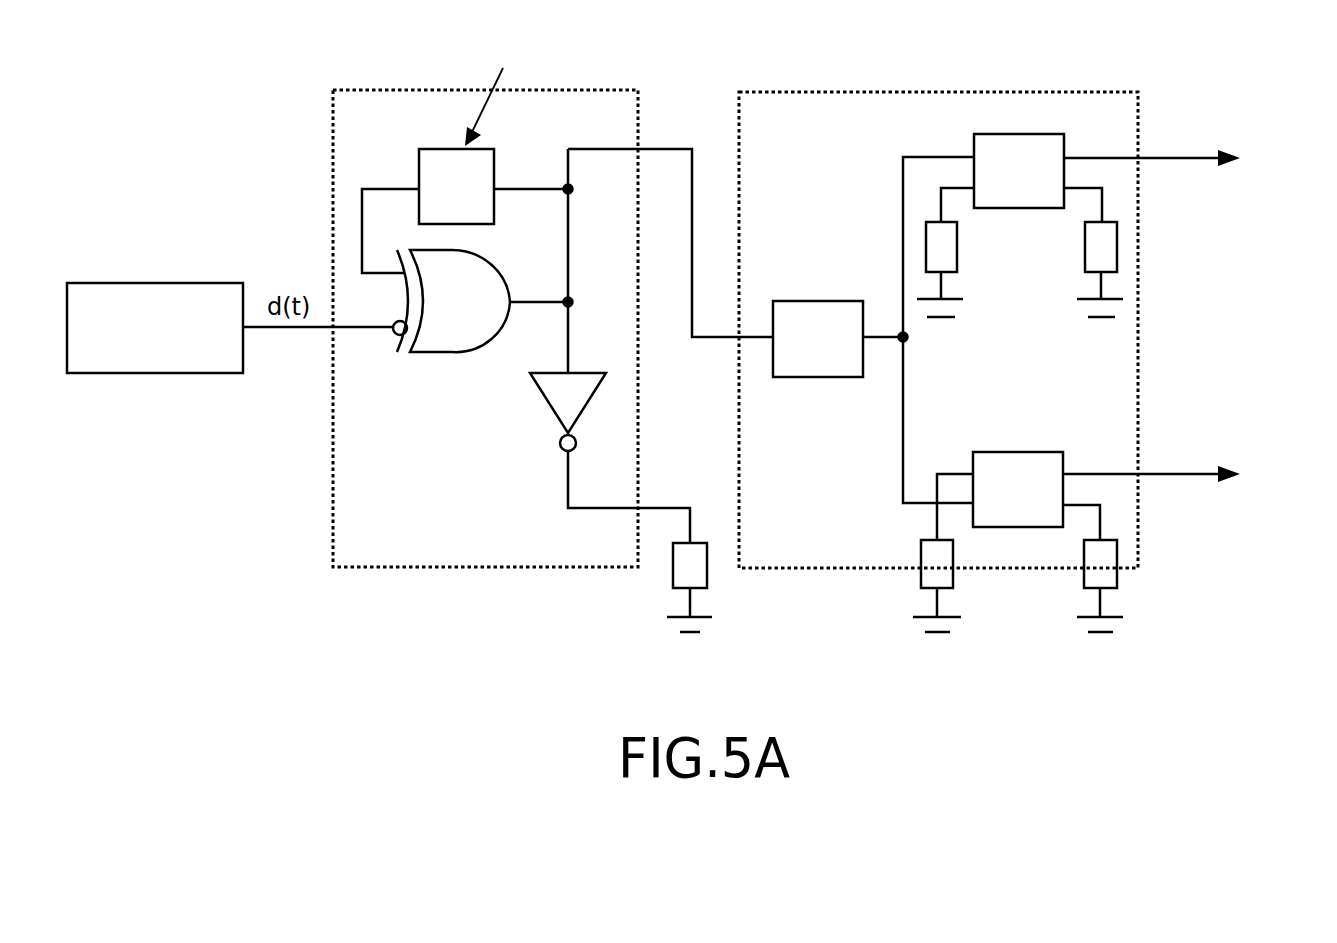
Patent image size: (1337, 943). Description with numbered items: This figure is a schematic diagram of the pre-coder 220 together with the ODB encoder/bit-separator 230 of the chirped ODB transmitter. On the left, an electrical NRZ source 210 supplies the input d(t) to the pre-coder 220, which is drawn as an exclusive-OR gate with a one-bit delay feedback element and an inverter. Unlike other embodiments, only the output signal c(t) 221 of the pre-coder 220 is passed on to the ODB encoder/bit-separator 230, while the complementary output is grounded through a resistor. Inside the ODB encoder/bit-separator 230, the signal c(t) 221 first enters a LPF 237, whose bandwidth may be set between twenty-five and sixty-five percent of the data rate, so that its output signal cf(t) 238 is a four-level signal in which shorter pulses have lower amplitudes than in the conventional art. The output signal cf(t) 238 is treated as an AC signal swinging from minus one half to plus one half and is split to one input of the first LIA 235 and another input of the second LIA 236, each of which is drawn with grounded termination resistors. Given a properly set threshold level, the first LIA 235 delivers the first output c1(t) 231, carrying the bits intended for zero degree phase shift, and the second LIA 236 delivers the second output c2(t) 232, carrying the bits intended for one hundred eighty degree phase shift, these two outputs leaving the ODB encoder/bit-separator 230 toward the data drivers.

The electrical NRZ source 210 is at (131, 357).
The pre-coder 220 is at (405, 557).
The output signal c(t) 221 is at (684, 105).
The ODB encoder/bit-separator 230 is at (812, 557).
The first output c1(t) 231 is at (1212, 112).
The second output c2(t) 232 is at (1210, 425).
The first LIA 235 is at (995, 200).
The second LIA 236 is at (994, 518).
The LPF (low-pass-filter) 237 is at (796, 369).
The output signal cf(t) 238 is at (895, 145).